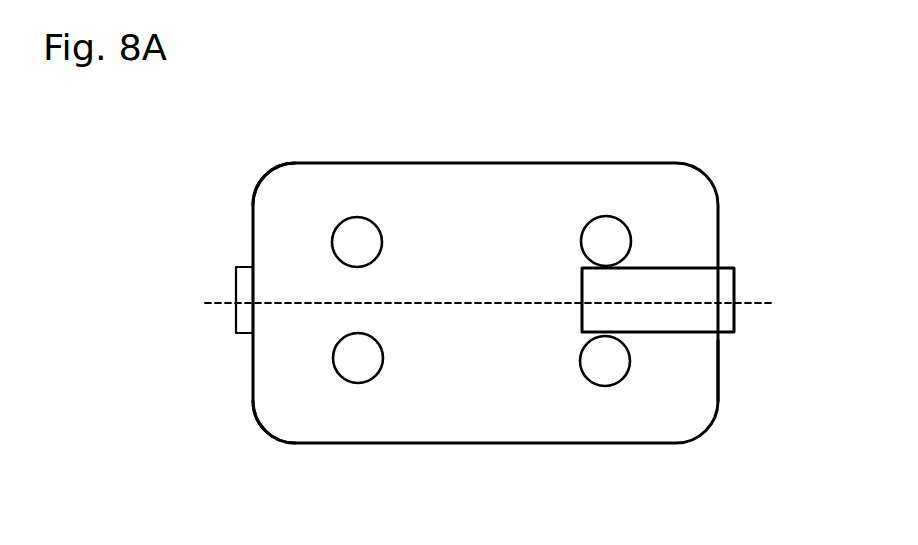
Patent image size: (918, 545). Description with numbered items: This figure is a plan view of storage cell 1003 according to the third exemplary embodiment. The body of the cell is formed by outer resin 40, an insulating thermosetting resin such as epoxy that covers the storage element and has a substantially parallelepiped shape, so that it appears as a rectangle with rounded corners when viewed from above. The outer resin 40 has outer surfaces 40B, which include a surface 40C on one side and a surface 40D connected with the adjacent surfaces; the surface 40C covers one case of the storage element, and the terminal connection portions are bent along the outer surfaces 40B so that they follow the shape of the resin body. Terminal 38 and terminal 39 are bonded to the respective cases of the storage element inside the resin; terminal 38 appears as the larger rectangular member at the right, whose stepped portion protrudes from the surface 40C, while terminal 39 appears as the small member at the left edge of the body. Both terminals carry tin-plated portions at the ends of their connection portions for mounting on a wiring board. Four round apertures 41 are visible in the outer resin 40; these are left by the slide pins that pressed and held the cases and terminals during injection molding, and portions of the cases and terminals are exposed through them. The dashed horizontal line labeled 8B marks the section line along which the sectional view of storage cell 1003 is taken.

The storage cell 1003 is at (727, 190).
The outer resin 40 is at (697, 393).
The outer surfaces 40B is at (695, 370).
The surface 40C is at (292, 200).
The surface 40D is at (250, 398).
The apertures 41 is at (620, 240).
The terminal 38 is at (723, 283).
The terminal 39 is at (236, 330).
The line 8B- 8B is at (493, 303).